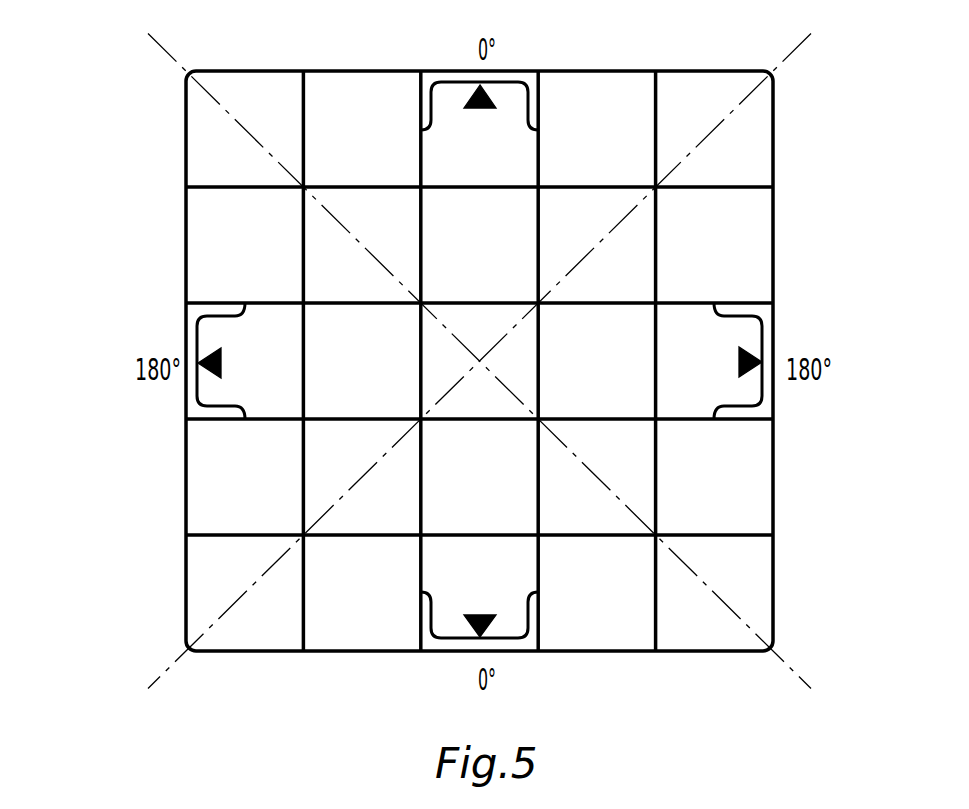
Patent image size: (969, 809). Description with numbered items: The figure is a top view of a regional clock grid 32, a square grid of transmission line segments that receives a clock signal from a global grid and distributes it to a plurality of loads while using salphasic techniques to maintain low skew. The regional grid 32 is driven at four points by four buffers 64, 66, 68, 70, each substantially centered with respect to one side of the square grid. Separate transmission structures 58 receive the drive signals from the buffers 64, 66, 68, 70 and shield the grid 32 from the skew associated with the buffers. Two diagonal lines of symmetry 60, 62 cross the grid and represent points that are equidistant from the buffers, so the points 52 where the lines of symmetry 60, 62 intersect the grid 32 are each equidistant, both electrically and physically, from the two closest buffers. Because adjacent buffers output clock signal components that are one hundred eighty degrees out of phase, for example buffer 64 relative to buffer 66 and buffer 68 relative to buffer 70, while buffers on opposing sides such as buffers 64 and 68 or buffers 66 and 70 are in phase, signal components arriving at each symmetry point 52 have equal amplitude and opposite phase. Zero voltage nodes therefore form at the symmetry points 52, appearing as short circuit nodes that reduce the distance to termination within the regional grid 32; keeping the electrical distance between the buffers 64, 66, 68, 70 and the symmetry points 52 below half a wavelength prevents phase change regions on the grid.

The regional clock grid 32 is at (94, 24).
The symmetry points 52 is at (186, 70).
The transmission structures 58 is at (528, 128).
The line of symmetry 60 is at (155, 48).
The line of symmetry 62 is at (800, 48).
The buffer 64 is at (476, 110).
The buffer 66 is at (738, 362).
The buffer 68 is at (476, 616).
The buffer 70 is at (222, 363).